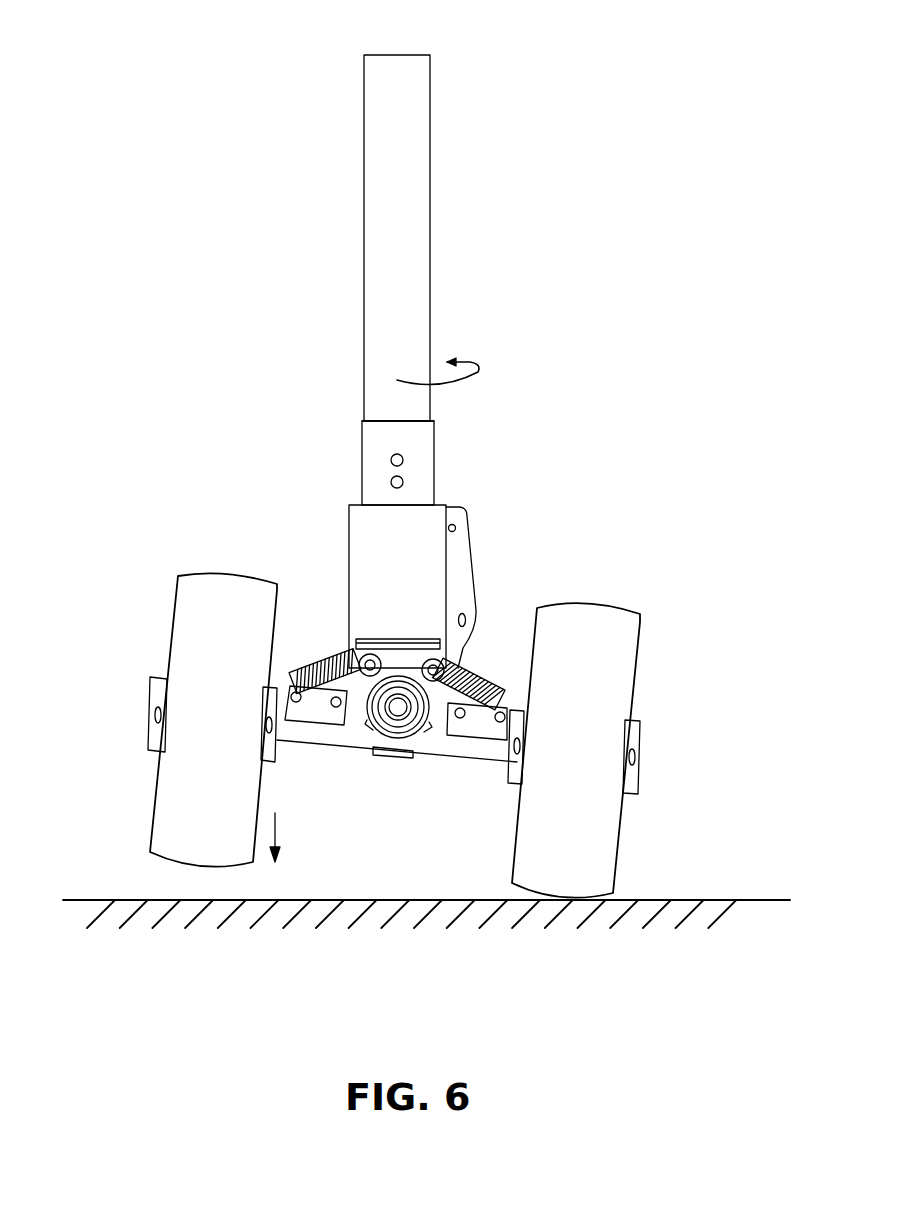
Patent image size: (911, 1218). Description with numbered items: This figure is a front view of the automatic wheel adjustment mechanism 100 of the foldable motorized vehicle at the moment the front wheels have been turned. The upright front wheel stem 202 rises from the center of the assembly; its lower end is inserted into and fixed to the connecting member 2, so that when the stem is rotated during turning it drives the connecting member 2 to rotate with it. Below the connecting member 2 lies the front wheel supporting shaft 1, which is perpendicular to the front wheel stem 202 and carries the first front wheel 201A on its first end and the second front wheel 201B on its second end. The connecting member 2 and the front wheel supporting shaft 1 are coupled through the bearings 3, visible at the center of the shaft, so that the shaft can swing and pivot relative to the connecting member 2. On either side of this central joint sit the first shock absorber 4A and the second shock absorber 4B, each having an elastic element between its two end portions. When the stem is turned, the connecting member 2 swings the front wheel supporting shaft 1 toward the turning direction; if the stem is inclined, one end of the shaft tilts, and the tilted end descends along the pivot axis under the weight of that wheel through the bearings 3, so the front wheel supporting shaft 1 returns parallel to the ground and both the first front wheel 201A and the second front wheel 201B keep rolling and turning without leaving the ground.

The automatic wheel adjustment mechanism 100 is at (95, 43).
The front wheel stem 202 is at (412, 235).
The connecting member 2 is at (398, 665).
The first shock absorber 4A is at (327, 670).
The second shock absorber 4B is at (473, 673).
The front wheel supporting shaft 1 is at (367, 737).
The bearings 3 is at (414, 730).
The first front wheel 201A is at (180, 780).
The second front wheel 201B is at (580, 842).